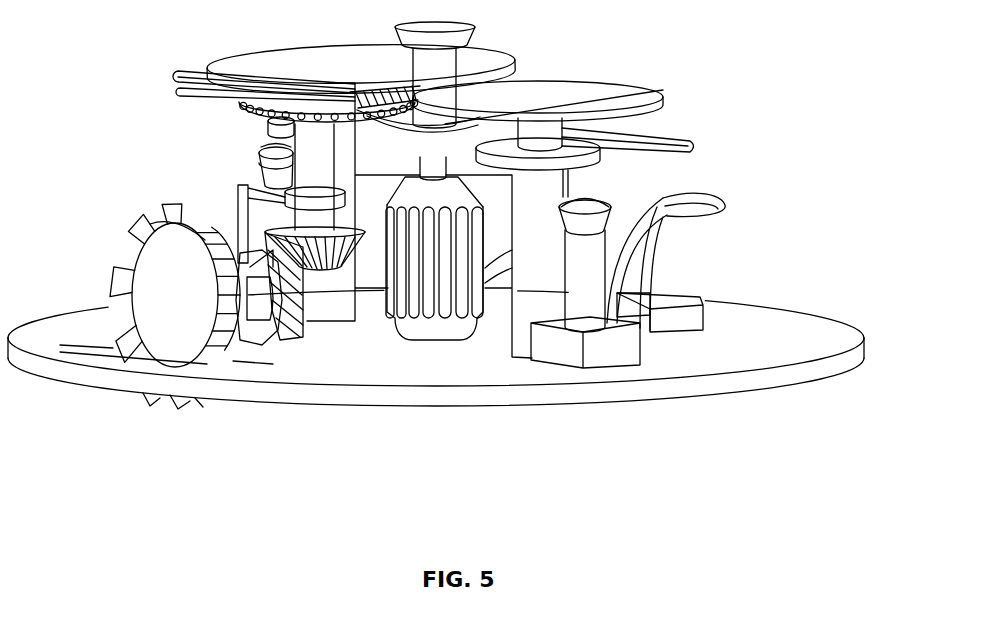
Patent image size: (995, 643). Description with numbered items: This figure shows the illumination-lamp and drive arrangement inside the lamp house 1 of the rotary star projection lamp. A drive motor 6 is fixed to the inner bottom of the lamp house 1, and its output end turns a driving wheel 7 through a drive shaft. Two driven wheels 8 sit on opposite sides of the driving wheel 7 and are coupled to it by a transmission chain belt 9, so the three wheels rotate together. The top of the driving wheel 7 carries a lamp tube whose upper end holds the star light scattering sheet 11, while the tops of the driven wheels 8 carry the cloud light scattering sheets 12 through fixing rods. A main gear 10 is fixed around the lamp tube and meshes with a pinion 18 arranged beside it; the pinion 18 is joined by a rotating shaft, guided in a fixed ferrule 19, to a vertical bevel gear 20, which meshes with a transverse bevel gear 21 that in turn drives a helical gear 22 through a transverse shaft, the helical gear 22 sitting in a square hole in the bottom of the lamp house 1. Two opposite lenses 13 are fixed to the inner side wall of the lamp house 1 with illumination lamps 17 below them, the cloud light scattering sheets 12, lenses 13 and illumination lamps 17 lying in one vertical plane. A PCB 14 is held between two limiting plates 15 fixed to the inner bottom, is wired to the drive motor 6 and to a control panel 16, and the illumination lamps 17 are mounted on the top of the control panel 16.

The lamp house 1 is at (803, 337).
The drive motor 6 is at (432, 332).
The driving wheel 7 is at (600, 83).
The driven wheel 8 is at (600, 157).
The transmission chain belt 9 is at (268, 130).
The main gear 10 is at (385, 93).
The star light scattering sheet 11 is at (433, 25).
The cloud light scattering sheet 12 is at (313, 53).
The lens 13 is at (640, 140).
The PCB 14 is at (690, 320).
The limiting plate 15 is at (655, 335).
The control panel 16 is at (597, 350).
The illumination lamp 17 is at (603, 213).
The pinion 18 is at (205, 82).
The fixed ferrule 19 is at (255, 183).
The vertical bevel gear 20 is at (297, 253).
The transverse bevel gear 21 is at (205, 260).
The helical gear 22 is at (160, 297).